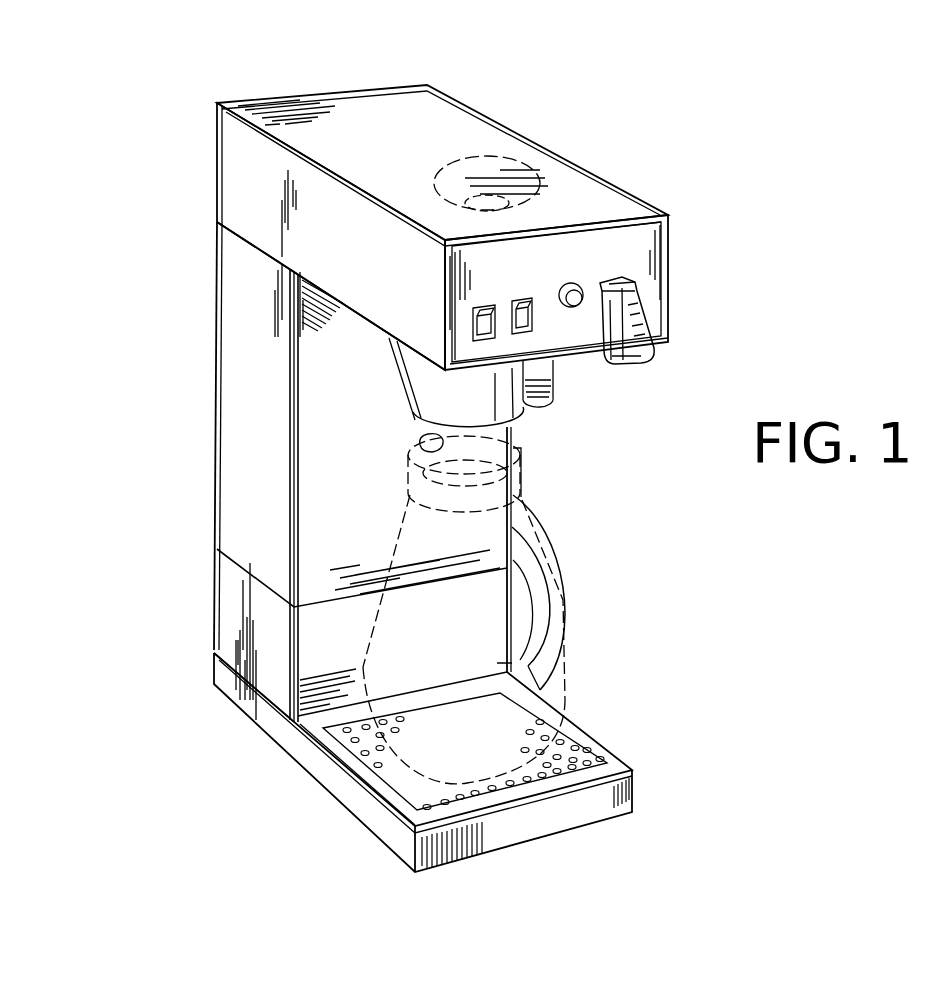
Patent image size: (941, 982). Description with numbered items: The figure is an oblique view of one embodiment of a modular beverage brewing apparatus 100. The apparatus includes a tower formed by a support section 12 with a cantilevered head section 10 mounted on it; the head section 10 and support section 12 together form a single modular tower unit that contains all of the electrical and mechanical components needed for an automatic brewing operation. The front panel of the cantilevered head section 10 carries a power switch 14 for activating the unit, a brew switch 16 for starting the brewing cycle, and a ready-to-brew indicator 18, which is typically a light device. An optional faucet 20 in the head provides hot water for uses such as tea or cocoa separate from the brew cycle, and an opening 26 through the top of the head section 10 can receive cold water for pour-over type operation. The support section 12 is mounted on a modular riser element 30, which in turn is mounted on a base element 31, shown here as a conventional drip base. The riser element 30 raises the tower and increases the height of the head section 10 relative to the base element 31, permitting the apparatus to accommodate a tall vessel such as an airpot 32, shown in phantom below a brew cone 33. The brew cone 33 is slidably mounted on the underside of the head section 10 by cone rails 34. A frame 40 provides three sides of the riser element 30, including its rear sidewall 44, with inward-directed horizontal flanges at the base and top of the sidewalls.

The beverage brewing apparatus 100 is at (545, 122).
The cantilevered head section 10 is at (226, 178).
The support section 12 is at (226, 431).
The power switch 14 is at (472, 329).
The brew switch 16 is at (528, 300).
The ready-to-brew indicator 18 is at (574, 306).
The faucet 20 is at (634, 330).
The opening 26 is at (457, 177).
The modular riser element 30 is at (244, 593).
The base element 31 is at (630, 794).
The airpot 32 is at (550, 585).
The brew cone 33 is at (404, 397).
The cone rails 34 is at (358, 308).
The frame 40 is at (463, 632).
The rear sidewall 44 is at (280, 670).